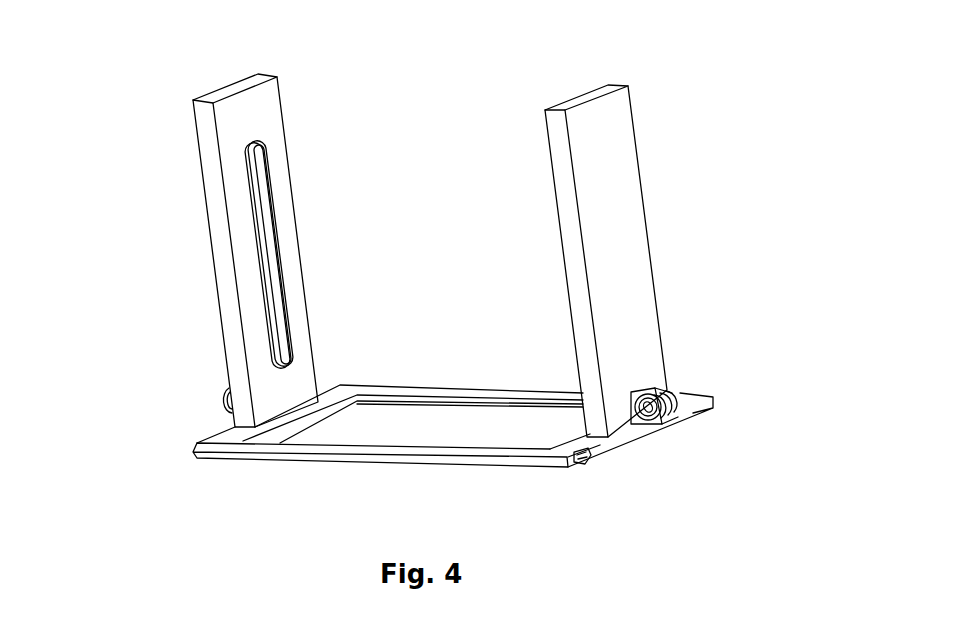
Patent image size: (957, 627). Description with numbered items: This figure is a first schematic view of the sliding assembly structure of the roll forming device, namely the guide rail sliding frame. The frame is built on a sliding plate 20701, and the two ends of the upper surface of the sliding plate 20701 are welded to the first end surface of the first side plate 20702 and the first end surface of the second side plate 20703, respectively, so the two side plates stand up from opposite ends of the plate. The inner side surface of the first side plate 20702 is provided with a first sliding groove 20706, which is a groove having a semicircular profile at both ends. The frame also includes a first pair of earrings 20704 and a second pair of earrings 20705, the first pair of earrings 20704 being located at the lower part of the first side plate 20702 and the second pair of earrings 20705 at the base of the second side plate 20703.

The sliding plate 20701 is at (195, 445).
The first side plate 20702 is at (243, 265).
The second side plate 20703 is at (618, 157).
The first pair of earrings 20704 is at (235, 418).
The second pair of earrings 20705 is at (660, 383).
The first sliding groove 20706 is at (248, 165).